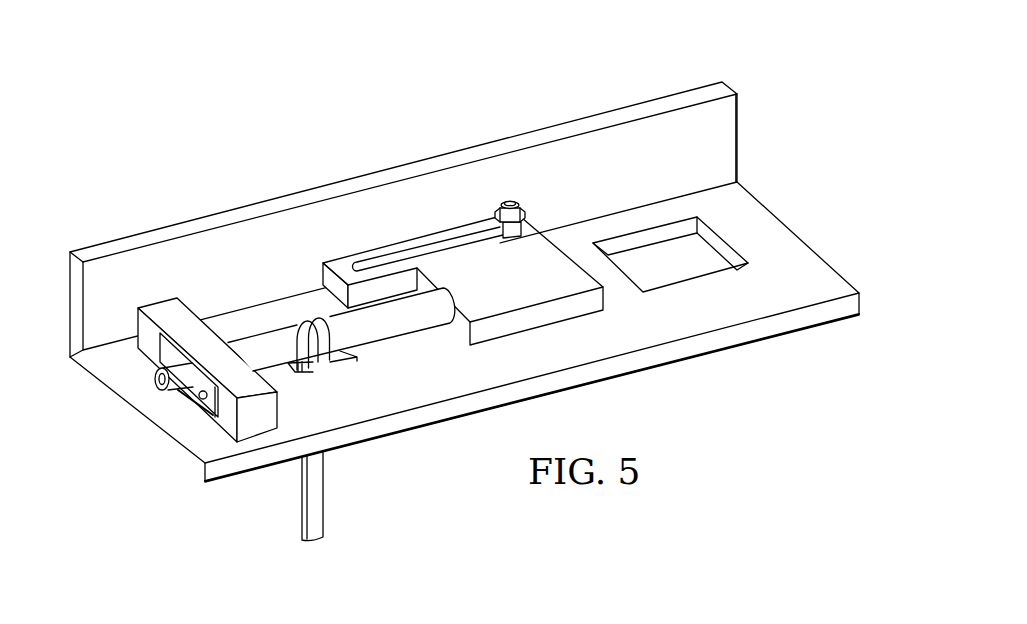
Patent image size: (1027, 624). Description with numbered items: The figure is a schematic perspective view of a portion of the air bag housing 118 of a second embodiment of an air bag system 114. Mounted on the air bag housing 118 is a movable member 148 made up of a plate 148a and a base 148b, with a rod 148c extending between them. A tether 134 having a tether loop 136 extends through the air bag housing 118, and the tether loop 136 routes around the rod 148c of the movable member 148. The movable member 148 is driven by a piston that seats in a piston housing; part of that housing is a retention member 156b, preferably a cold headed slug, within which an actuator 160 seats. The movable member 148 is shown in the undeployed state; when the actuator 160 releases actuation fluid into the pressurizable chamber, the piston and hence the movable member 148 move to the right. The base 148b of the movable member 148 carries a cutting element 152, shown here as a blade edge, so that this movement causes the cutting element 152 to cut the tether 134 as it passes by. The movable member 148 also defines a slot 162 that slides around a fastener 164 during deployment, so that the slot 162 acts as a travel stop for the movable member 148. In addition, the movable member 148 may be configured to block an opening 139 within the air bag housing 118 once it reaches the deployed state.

The air bag system 114 is at (438, 278).
The air bag housing 118 is at (740, 138).
The tether 134 is at (325, 493).
The tether loop 136 is at (303, 322).
The opening 139 is at (652, 247).
The movable member 148 is at (418, 242).
The plate 148a is at (404, 214).
The base 148b is at (147, 342).
The rod 148c is at (300, 318).
The cutting element 152 is at (292, 418).
The retention member 156b is at (167, 355).
The actuator 160 is at (166, 382).
The slot 162 is at (431, 242).
The fastener 164 is at (510, 200).